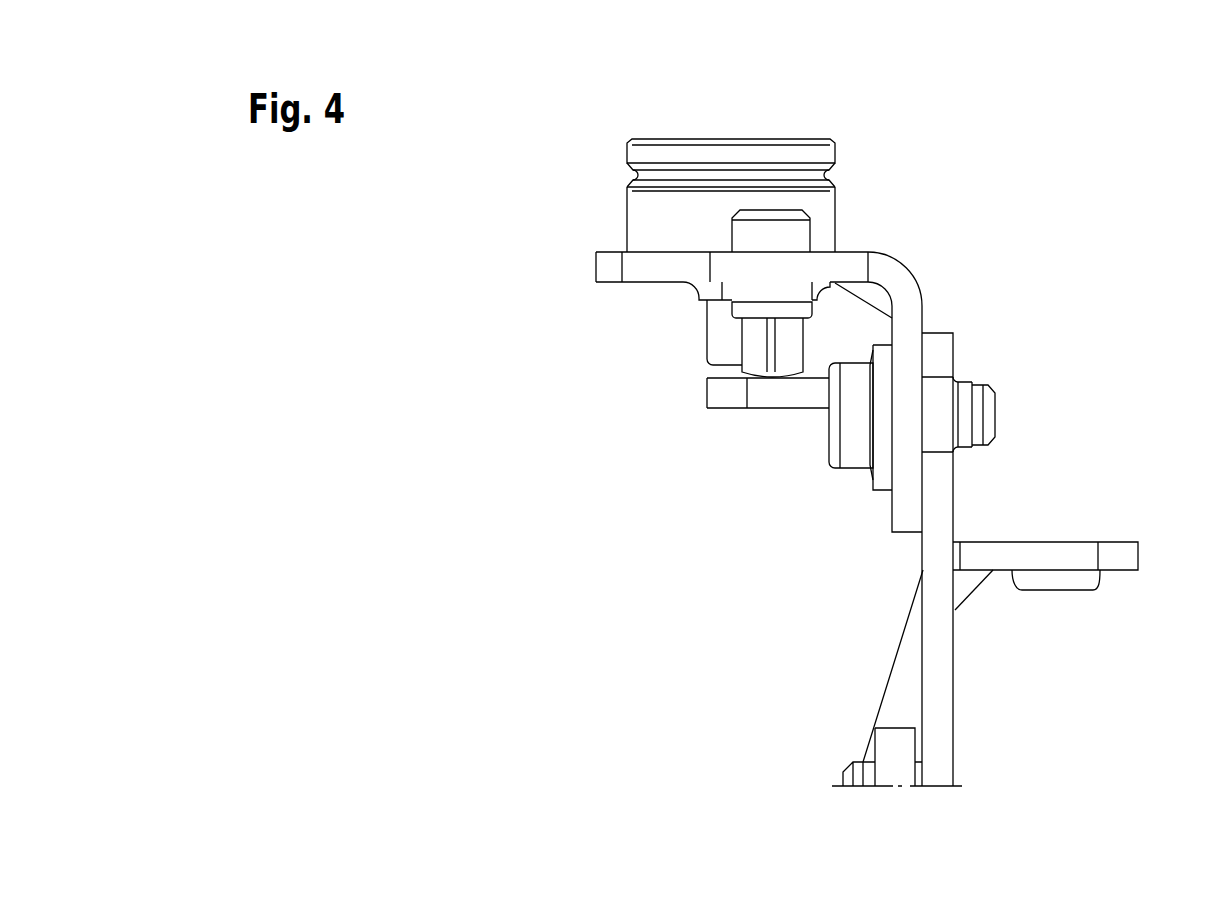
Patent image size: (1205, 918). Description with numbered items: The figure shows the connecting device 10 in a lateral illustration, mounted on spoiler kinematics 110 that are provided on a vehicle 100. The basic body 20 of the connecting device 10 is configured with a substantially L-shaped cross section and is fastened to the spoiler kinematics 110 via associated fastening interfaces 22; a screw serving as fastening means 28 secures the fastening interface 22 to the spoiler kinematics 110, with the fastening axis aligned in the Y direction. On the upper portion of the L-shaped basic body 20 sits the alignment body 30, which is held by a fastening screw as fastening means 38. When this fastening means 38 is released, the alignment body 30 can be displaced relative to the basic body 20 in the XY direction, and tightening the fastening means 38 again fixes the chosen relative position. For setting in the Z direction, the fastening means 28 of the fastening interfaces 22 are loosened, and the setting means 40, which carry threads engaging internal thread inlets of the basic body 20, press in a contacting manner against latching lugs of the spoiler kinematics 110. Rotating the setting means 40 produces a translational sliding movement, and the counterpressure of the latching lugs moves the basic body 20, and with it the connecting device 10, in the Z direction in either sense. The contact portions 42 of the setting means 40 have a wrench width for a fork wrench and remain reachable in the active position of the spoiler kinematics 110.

The connecting device 10 is at (443, 368).
The basic body 20 is at (893, 277).
The fastening interface 22 is at (885, 478).
The fastening means 28 is at (833, 430).
The alignment body 30 is at (712, 152).
The fastening means 38 is at (720, 325).
The setting means 40 is at (793, 237).
The contact portion 42 is at (762, 350).
The vehicle 100 is at (1072, 137).
The spoiler kinematics 110 is at (1047, 570).